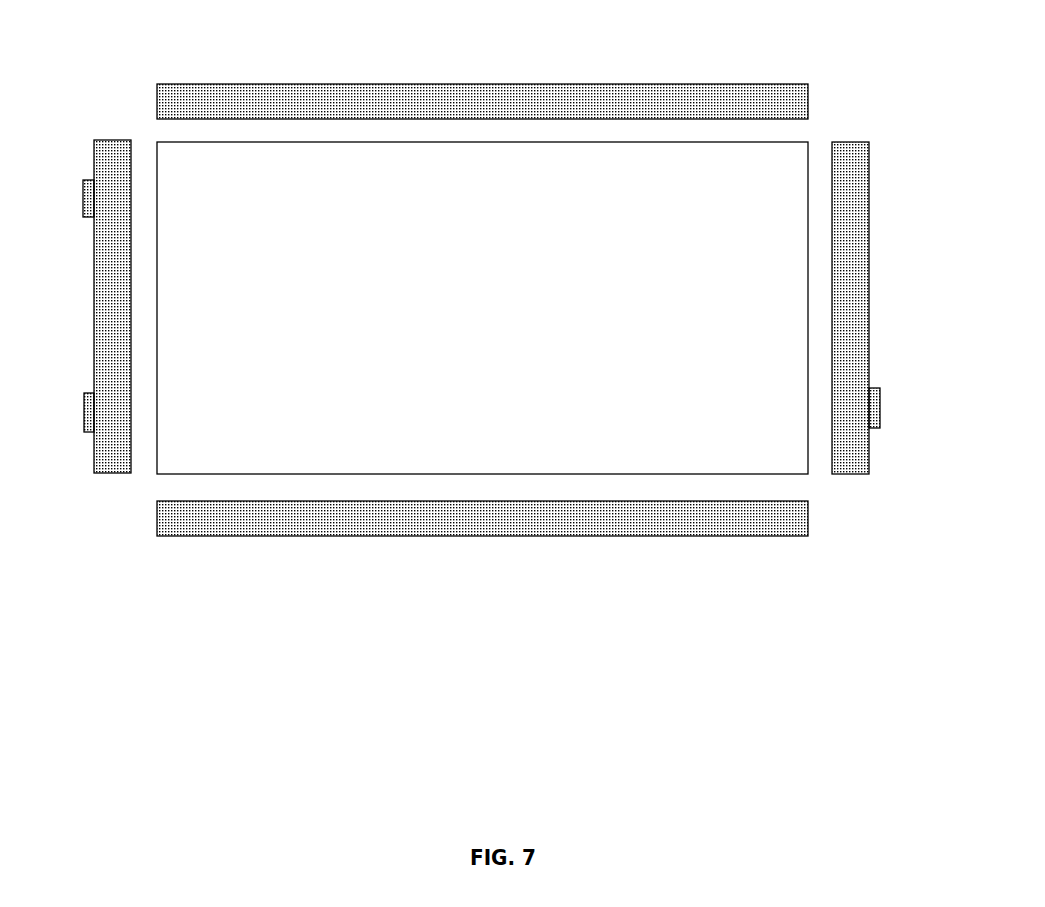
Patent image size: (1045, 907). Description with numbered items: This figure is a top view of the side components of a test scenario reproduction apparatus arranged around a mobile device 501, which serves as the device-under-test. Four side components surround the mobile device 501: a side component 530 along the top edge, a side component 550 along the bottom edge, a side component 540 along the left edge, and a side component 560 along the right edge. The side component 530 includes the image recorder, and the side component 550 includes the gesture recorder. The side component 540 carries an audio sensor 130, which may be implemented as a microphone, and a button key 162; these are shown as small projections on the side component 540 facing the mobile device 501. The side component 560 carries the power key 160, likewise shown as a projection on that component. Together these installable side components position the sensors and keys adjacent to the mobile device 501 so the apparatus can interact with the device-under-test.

The mobile device 501 is at (493, 324).
The side component 530 is at (526, 83).
The side component 550 is at (628, 537).
The side component 540 is at (112, 140).
The side component 560 is at (850, 142).
The audio sensor 130 is at (86, 218).
The button key 162 is at (86, 432).
The power key 160 is at (877, 427).